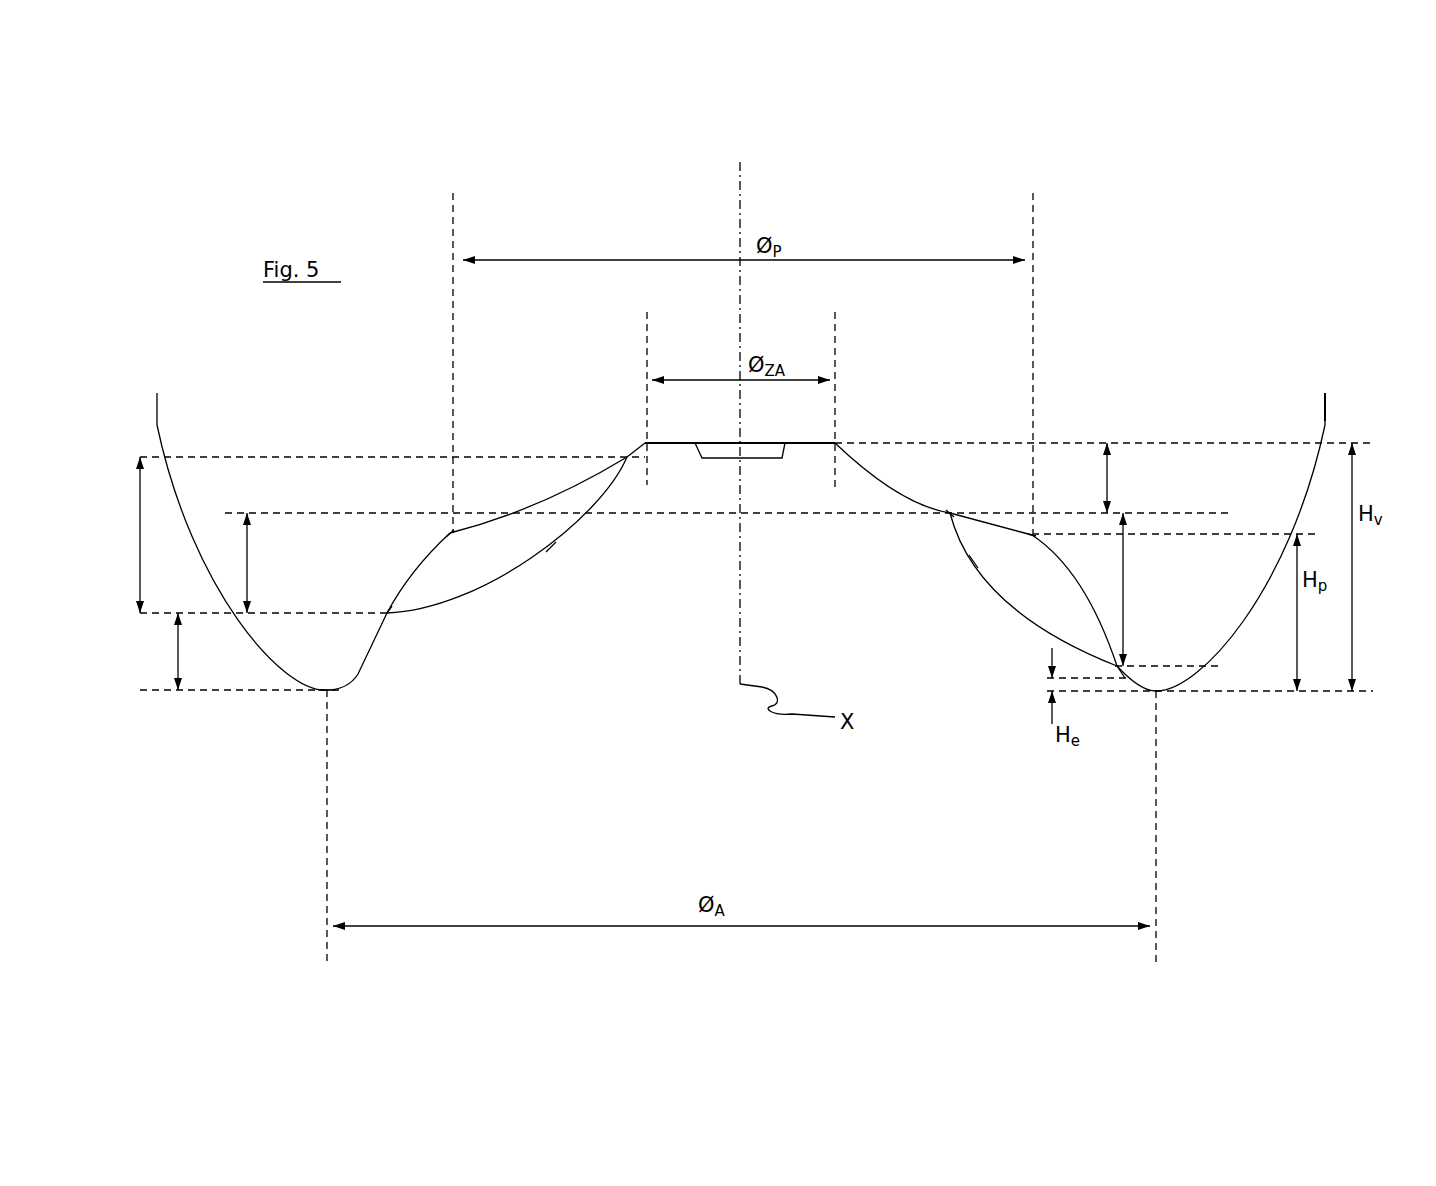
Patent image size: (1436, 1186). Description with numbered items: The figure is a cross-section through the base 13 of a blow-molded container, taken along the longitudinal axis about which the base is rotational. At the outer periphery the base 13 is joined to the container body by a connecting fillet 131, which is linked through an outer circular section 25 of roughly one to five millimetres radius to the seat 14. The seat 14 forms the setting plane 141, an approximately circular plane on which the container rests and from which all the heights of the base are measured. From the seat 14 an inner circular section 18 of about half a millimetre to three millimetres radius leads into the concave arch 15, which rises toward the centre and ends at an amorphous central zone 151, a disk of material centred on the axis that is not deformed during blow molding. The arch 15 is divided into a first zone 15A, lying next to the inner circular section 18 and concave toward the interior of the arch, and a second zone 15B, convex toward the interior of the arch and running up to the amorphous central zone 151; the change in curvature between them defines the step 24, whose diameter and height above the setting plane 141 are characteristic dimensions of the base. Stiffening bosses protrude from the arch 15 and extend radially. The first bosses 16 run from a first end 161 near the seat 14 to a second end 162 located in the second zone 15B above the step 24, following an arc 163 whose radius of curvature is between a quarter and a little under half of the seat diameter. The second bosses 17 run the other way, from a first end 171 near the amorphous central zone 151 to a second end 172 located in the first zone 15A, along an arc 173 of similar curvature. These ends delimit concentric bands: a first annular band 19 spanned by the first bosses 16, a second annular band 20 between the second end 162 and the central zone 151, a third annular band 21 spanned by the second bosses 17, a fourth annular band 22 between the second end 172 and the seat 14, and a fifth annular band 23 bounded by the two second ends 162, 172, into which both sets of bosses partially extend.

The base 13 is at (1272, 291).
The connecting fillet 131 is at (1325, 421).
The seat 14 is at (347, 713).
The setting plane 141 is at (327, 690).
The concave arch 15 is at (699, 583).
The first zone 15A is at (413, 584).
The second zone 15B is at (606, 472).
The first bosses 16 is at (1014, 609).
The first end of first bosses 161 is at (1109, 681).
The second end of first bosses 162 is at (947, 520).
The arc of first bosses 163 is at (972, 563).
The second bosses 17 is at (507, 587).
The first end of second bosses 171 is at (626, 456).
The second end of second bosses 172 is at (389, 618).
The arc of second bosses 173 is at (549, 547).
The inner circular section 18 is at (363, 683).
The first annular band 19 is at (1139, 589).
The second annular band 20 is at (1123, 478).
The third annular band 21 is at (157, 535).
The fourth annular band 22 is at (195, 651).
The fifth annular band 23 is at (263, 563).
The step 24 is at (449, 530).
The outer circular section 25 is at (1175, 697).
The amorphous central zone 151 is at (667, 447).